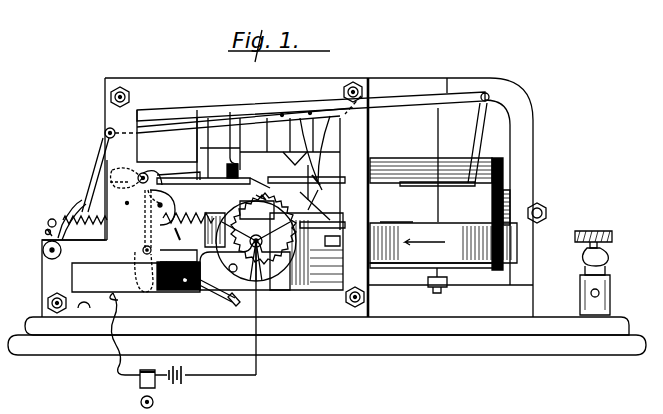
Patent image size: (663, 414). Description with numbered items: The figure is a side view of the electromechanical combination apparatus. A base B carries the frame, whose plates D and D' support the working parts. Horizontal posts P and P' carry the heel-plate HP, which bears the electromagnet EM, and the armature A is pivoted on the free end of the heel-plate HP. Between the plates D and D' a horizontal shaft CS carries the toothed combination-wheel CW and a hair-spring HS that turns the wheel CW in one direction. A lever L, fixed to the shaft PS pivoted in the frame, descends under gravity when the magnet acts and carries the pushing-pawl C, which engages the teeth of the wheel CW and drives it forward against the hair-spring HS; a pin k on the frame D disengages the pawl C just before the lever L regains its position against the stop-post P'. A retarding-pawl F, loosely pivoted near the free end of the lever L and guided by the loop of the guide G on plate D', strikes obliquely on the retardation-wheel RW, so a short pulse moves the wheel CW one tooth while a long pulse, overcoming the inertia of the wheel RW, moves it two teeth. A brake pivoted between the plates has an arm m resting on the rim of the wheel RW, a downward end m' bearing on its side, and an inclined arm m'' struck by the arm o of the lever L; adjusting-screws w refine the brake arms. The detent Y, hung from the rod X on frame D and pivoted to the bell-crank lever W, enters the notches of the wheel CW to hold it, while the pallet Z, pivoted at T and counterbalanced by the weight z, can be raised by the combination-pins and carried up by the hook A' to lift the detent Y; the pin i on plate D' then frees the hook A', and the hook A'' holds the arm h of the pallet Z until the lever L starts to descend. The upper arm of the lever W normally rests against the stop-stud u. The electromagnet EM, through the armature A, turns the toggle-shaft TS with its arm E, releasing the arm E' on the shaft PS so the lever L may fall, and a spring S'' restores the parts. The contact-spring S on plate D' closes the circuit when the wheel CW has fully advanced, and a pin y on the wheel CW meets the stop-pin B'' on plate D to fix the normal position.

The base B is at (327, 336).
The horizontal post P is at (287, 197).
The heel-plate HP is at (515, 197).
The lever L is at (313, 106).
The horizontal post (stop-post) P' is at (355, 91).
The armature A is at (245, 139).
The shaft PS is at (106, 132).
The hook A'' is at (224, 145).
The frame-plate D' is at (290, 142).
The hook A' is at (274, 135).
The horizontal pin i is at (295, 141).
The arm o is at (326, 173).
The pushing-pawl C is at (316, 157).
The pin k is at (306, 175).
The arm (lip) of pallet h is at (246, 180).
The inclined arm of brake m'' is at (322, 205).
The brake end m' is at (322, 228).
The adjusting-screws w is at (348, 249).
The rod X is at (200, 149).
The pallet Z is at (178, 172).
The pivot T is at (145, 173).
The detent Y is at (169, 205).
The stop-stud u is at (164, 208).
The weight z is at (126, 186).
The pin or projection y is at (143, 250).
The arm E' is at (93, 189).
The arm E is at (74, 215).
The toggle-shaft TS is at (43, 250).
The spring S'' is at (183, 233).
The contact-spring S is at (178, 252).
The combination-wheel CW is at (274, 248).
The hair-spring HS is at (256, 241).
The shaft CS is at (256, 301).
The frame-plate D is at (178, 283).
The stop-pin B'' is at (245, 266).
The bell-crank lever W is at (201, 284).
The electromagnet EM is at (440, 214).
The guide G is at (437, 155).
The retarding-pawl F is at (480, 143).
The brake arm m is at (396, 211).
The retardation-wheel RW is at (443, 258).